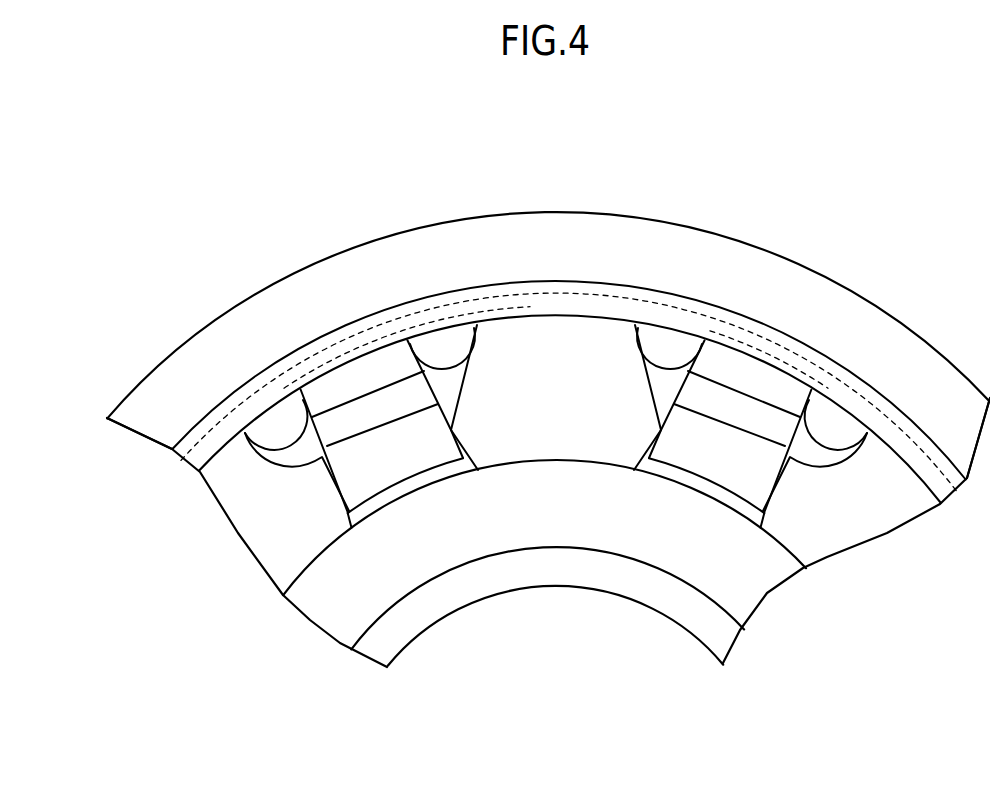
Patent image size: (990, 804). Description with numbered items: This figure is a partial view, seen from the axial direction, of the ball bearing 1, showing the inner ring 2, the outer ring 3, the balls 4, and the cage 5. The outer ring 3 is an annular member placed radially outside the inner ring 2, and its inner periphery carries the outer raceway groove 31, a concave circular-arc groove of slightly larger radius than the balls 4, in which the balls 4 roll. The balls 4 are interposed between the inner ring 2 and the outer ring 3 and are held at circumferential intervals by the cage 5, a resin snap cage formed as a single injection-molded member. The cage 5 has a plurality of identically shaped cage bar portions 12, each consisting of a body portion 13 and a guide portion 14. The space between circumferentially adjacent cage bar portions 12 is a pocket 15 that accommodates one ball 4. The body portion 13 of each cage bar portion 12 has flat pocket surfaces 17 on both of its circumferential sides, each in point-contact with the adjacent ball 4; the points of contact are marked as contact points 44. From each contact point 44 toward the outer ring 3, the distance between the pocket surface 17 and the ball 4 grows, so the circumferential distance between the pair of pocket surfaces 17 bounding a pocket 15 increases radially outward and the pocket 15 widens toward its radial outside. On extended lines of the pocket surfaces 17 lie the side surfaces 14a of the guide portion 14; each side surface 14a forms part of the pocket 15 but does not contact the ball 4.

The ball bearing 1 is at (614, 213).
The inner ring 2 is at (557, 528).
The outer ring 3 is at (451, 243).
The outer raceway groove 31 is at (532, 307).
The balls 4 is at (558, 343).
The cage 5 is at (777, 298).
The cage bar portions 12 is at (407, 487).
The body portion 13 is at (375, 450).
The guide portion 14 is at (327, 395).
The side surfaces 14a is at (300, 392).
The pocket 15 is at (277, 423).
The pocket surfaces 17 is at (271, 426).
The contact points 44 is at (343, 498).